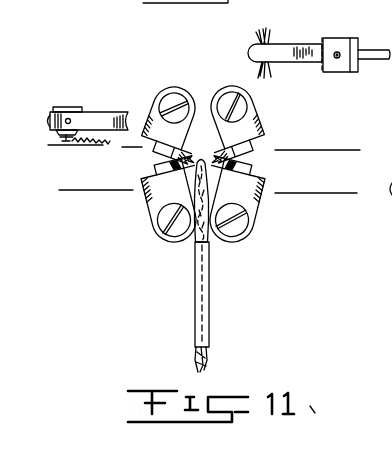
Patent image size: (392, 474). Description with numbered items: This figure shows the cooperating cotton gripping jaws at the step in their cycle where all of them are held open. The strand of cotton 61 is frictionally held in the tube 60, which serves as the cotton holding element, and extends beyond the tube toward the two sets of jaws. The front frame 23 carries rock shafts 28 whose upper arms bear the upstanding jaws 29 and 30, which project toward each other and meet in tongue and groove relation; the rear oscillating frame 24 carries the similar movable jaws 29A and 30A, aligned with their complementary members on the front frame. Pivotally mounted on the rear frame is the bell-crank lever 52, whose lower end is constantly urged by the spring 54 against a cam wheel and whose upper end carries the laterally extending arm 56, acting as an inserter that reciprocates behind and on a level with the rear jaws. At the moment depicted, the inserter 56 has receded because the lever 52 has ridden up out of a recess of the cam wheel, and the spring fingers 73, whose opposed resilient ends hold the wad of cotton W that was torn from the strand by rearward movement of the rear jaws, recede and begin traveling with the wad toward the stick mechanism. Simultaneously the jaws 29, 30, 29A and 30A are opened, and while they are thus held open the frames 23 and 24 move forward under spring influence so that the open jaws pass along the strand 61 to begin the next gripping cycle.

The front frame 23 is at (295, 194).
The rear oscillating frame 24 is at (295, 150).
The rock shaft 28 is at (168, 226).
The jaw 29 is at (172, 172).
The jaw 30 is at (233, 172).
The movable jaw 29A is at (189, 148).
The movable jaw 30A is at (215, 159).
The bell-crank lever 52 is at (61, 110).
The spring 54 is at (101, 147).
The laterally extending arm 56 is at (100, 116).
The tube 60 is at (194, 302).
The strand of cotton 61 is at (198, 238).
The spring fingers 73 is at (289, 50).
The wad of cotton W is at (256, 35).